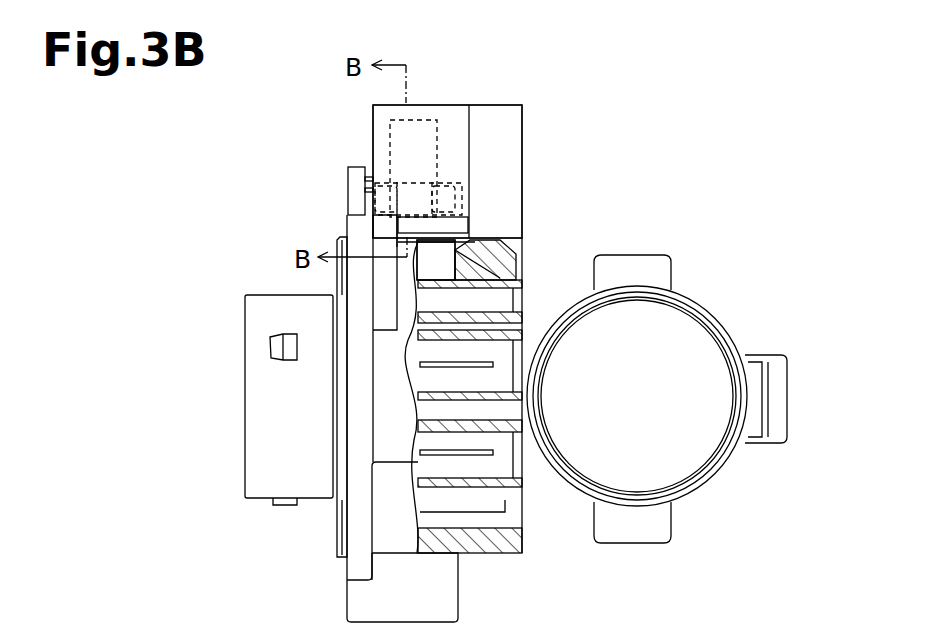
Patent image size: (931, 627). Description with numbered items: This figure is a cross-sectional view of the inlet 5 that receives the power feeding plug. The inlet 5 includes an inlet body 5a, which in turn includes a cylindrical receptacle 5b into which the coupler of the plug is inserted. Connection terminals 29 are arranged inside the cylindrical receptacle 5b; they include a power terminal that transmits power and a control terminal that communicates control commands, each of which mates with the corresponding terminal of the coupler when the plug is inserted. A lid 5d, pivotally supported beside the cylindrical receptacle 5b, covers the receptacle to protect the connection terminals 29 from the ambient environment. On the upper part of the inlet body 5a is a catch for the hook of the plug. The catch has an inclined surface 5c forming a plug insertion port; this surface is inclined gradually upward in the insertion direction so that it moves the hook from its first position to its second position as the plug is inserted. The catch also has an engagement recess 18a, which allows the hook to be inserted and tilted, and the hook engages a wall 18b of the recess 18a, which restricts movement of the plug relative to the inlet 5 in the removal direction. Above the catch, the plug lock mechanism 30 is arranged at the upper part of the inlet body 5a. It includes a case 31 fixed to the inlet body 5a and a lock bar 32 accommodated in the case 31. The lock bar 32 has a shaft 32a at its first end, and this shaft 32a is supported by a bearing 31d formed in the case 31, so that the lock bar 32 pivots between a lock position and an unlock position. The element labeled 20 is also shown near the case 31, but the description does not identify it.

The inlet 5 is at (777, 132).
The inlet body 5a is at (490, 556).
The cylindrical receptacle 5b is at (518, 302).
The inclined surface 5c is at (520, 252).
The lid 5d is at (670, 272).
The engagement recess 18a is at (417, 262).
The wall 18b is at (480, 229).
The terminal 20 is at (445, 240).
The connection terminals 29 is at (493, 452).
The plug lock mechanism 30 is at (573, 93).
The case 31 is at (500, 104).
The bearing 31d is at (385, 188).
The lock bar 32 is at (405, 175).
The shaft 32a is at (470, 196).